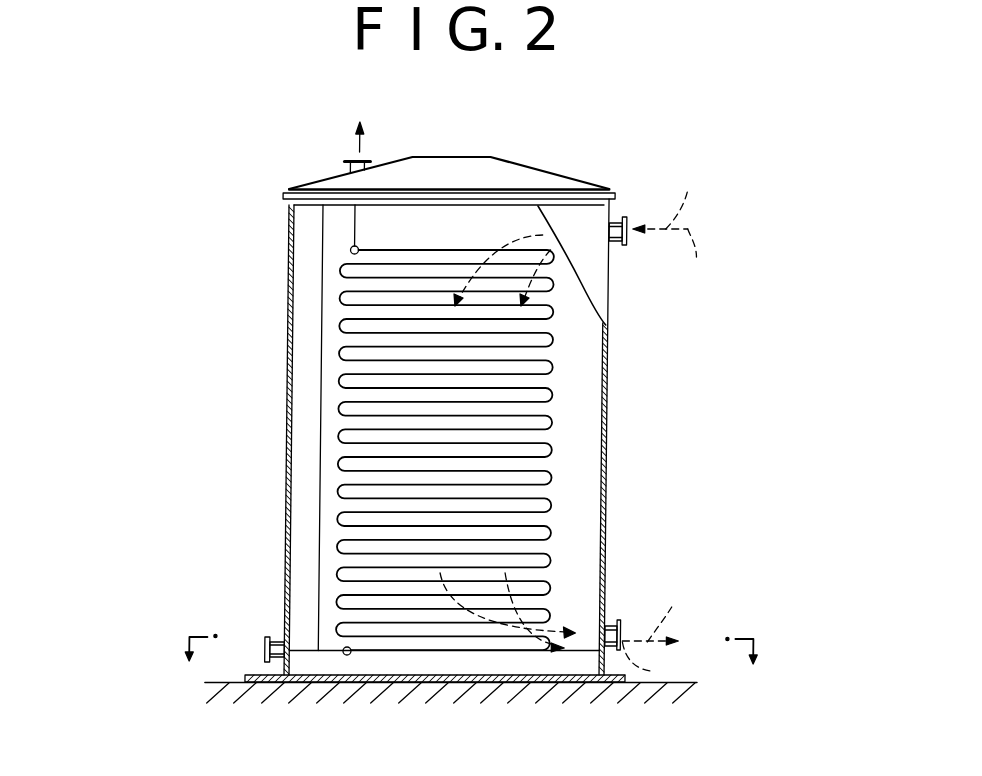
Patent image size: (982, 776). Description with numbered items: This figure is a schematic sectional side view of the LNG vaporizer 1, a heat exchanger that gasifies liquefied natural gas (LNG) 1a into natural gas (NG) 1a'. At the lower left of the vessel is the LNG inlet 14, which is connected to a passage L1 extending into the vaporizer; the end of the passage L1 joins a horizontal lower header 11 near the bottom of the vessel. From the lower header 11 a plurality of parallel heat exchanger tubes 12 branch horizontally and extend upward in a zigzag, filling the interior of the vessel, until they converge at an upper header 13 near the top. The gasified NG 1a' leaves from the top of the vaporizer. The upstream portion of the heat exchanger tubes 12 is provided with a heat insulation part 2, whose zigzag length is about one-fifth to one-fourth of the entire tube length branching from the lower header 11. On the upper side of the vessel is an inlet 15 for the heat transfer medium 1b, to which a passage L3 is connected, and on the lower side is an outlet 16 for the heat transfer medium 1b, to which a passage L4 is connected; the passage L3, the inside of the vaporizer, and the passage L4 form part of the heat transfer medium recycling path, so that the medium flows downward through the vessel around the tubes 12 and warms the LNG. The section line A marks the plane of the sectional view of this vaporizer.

The LNG vaporizer 1 is at (614, 376).
The liquefied natural gas (LNG) 1a is at (208, 679).
The natural gas (NG) 1a' is at (388, 138).
The heat transfer medium 1b is at (660, 400).
The heat insulation part 2 is at (448, 655).
The lower header 11 is at (352, 657).
The heat exchanger tubes 12 is at (342, 359).
The upper header 13 is at (351, 250).
The LNG inlet 14 is at (281, 636).
The heat transfer medium inlet 15 is at (619, 218).
The heat transfer medium outlet 16 is at (614, 624).
The passage L1 is at (307, 656).
The passage L3 is at (585, 267).
The passage L4 is at (564, 626).
The section line A- A is at (469, 632).